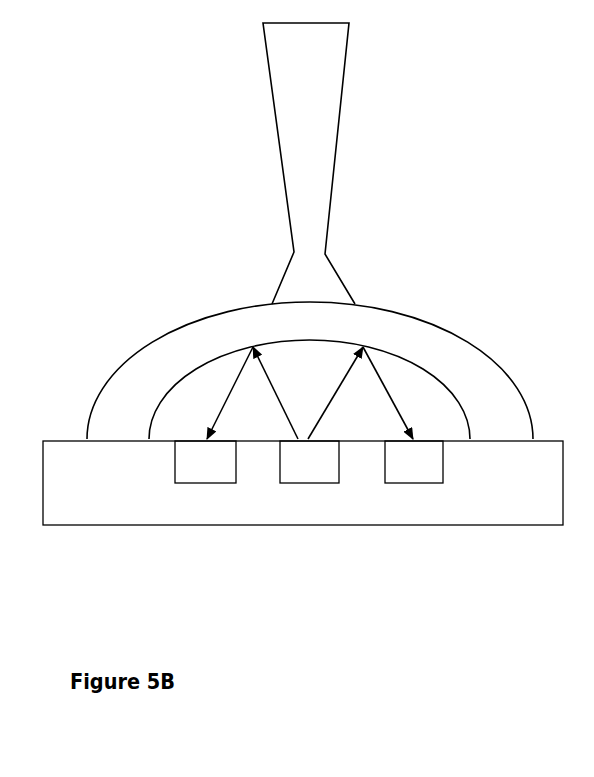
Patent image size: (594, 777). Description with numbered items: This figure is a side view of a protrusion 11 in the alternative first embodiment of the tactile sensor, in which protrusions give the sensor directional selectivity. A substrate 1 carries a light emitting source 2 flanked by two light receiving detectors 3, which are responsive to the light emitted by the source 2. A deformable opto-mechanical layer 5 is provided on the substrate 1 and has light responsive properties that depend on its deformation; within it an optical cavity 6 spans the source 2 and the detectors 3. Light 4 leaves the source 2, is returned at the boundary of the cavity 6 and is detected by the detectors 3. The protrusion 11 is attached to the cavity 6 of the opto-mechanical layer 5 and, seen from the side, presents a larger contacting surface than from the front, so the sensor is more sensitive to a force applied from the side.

The substrate 1 is at (98, 493).
The light emitting source 2 is at (308, 484).
The light receiving detector 3 is at (198, 484).
The light 4 is at (222, 405).
The opto-mechanical layer 5 is at (387, 332).
The optical cavity 6 is at (427, 400).
The protrusion 11 is at (352, 161).